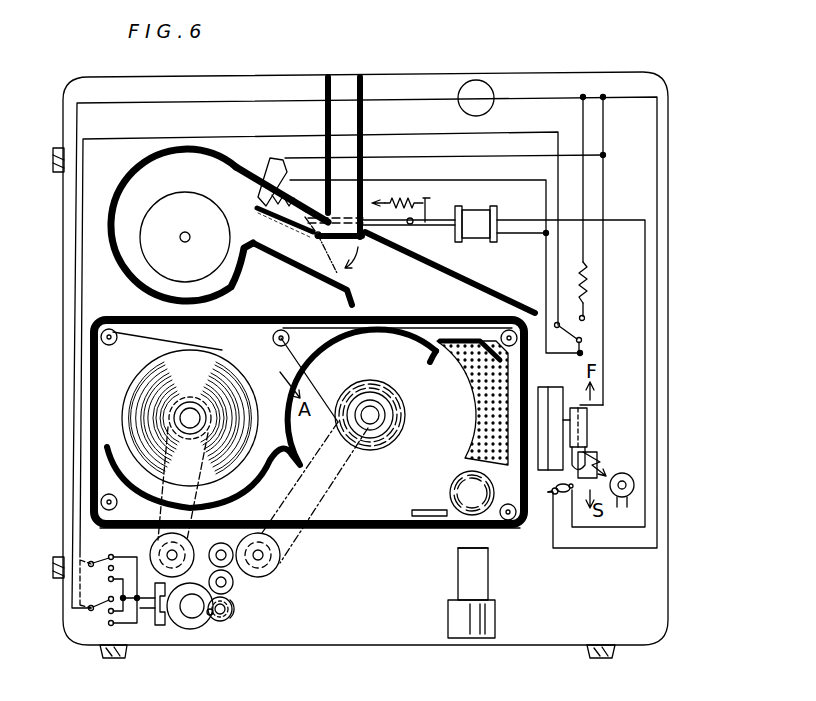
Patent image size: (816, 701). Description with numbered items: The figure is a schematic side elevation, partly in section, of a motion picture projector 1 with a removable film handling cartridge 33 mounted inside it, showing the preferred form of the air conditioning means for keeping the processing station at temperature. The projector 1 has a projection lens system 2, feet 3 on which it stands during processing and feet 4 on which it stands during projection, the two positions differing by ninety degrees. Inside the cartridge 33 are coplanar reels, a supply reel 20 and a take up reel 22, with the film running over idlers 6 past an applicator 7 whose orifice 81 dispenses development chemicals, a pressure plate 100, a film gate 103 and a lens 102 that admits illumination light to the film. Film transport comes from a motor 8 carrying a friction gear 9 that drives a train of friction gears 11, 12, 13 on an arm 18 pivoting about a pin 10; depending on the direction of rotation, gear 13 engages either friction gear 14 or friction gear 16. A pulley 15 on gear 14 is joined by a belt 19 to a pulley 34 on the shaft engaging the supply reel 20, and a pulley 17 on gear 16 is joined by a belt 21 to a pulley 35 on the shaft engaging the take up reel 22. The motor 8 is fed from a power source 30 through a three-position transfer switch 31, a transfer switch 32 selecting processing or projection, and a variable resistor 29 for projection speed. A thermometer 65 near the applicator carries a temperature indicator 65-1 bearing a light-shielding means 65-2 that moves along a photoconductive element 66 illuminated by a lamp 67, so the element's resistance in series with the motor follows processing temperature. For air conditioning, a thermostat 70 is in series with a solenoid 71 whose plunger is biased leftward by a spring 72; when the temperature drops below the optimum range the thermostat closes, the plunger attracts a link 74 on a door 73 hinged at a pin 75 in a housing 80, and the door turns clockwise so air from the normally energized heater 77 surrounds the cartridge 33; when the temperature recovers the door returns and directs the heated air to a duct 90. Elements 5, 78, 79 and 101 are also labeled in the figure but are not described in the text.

The projector 1 is at (637, 597).
The projection lens system 2 is at (485, 620).
The feet 3 is at (122, 655).
The feet 4 is at (55, 147).
The film lead line 5 is at (303, 380).
The idlers 6 is at (110, 317).
The applicator 7 is at (443, 367).
The motor 8 is at (177, 623).
The friction gear 9 is at (195, 610).
The pin 10 is at (220, 621).
The friction gear 11 is at (210, 614).
The friction gear 12 is at (235, 586).
The friction gear 13 is at (232, 568).
The friction gear 14 is at (268, 578).
The pulley 15 is at (272, 555).
The friction gear 16 is at (152, 545).
The pulley 17 is at (158, 553).
The arm 18 is at (231, 606).
The belt 19 is at (307, 538).
The supply reel 20 is at (370, 407).
The belt 21 is at (240, 428).
The take up reel 22 is at (195, 405).
The variable resistor 29 is at (588, 291).
The power source 30 is at (476, 80).
The transfer switch 31 is at (73, 598).
The transfer switch 32 is at (575, 326).
The film handling cartridge 33 is at (227, 317).
The pulley 34 is at (382, 400).
The pulley 35 is at (207, 400).
The thermometer 65 is at (540, 395).
The temperature indicator 65-1 is at (572, 415).
The light-shielding means 65-2 is at (587, 425).
The photoconductive element 66 is at (605, 453).
The lamp 67 is at (634, 476).
The thermostat 70 is at (562, 493).
The solenoid 71 is at (468, 222).
The spring 72 is at (398, 195).
The door 73 is at (345, 245).
The link 74 is at (297, 232).
The pin 75 is at (312, 252).
The heater 77 is at (280, 165).
The upper film guide 78 is at (255, 205).
The film cartridge 79 is at (183, 203).
The housing 80 is at (130, 170).
The orifice 81 is at (465, 418).
The duct 90 is at (352, 88).
The pressure plate 100 is at (437, 517).
The chassis bottom edge 101 is at (422, 530).
The lens 102 is at (458, 482).
The film gate 103 is at (477, 524).